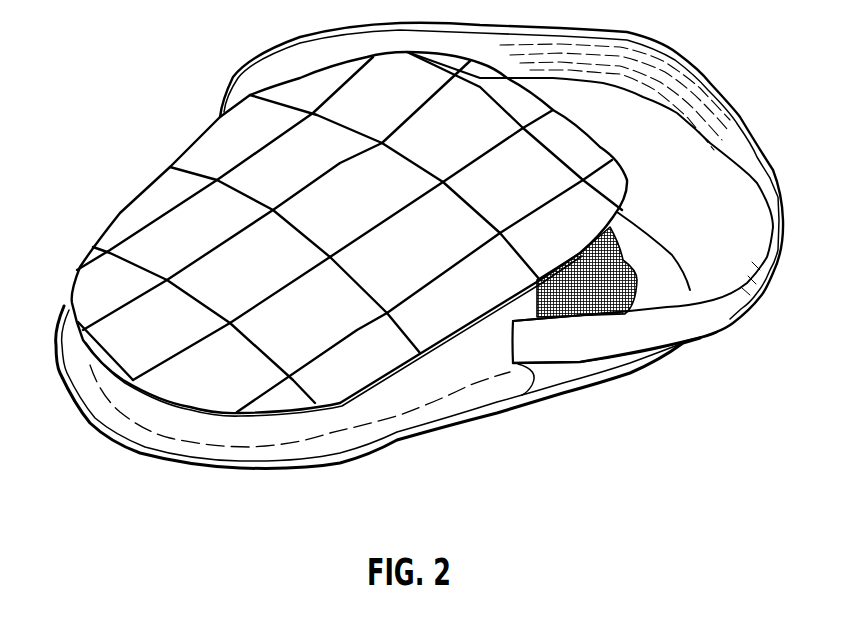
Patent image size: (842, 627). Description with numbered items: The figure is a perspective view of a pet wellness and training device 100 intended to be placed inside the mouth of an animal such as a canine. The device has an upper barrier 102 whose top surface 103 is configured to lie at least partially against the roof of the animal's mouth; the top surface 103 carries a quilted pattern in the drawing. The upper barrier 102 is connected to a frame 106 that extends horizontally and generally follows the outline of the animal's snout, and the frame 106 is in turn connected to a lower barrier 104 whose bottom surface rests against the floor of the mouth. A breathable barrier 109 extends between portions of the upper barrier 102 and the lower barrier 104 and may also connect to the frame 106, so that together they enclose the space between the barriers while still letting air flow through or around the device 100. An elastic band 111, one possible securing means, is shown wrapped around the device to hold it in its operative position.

The pet wellness and training device 100 is at (134, 132).
The upper barrier 102 is at (120, 216).
The top surface 103 is at (365, 225).
The lower barrier 104 is at (587, 377).
The frame 106 is at (427, 392).
The breathable barrier 109 is at (633, 277).
The elastic band 111 is at (715, 315).